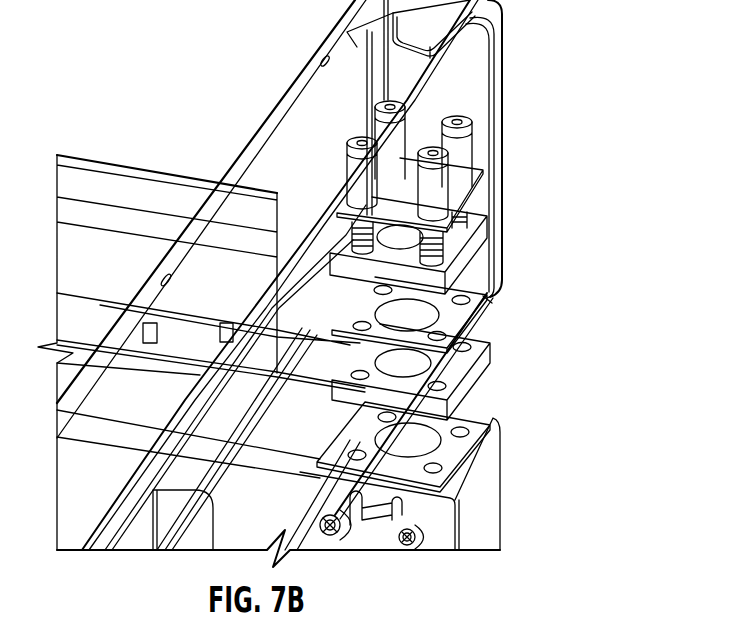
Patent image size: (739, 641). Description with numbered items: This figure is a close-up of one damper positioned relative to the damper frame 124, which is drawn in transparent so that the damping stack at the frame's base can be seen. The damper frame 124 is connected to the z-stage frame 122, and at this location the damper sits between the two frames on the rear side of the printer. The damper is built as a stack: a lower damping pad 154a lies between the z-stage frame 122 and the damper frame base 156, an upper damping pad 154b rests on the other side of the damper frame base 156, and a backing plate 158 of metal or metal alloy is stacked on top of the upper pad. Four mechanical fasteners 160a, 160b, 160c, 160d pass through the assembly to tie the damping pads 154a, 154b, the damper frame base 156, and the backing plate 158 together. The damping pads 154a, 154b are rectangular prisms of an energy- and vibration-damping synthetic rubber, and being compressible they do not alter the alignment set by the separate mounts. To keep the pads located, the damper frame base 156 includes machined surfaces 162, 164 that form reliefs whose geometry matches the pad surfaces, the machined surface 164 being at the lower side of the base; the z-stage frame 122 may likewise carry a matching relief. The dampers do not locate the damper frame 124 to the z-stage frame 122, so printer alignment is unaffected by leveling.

The z-stage frame 122 is at (523, 417).
The damper frame 124 is at (570, 5).
The damping pad 154a is at (470, 377).
The damping pad 154b is at (486, 230).
The damper frame base 156 is at (482, 298).
The backing plate 158 is at (484, 174).
The mechanical fastener 160a is at (463, 117).
The mechanical fastener 160b is at (446, 152).
The mechanical fastener 160c is at (377, 103).
The mechanical fastener 160d is at (351, 137).
The machined surface 162 is at (482, 323).
The machined surface 164 is at (487, 294).